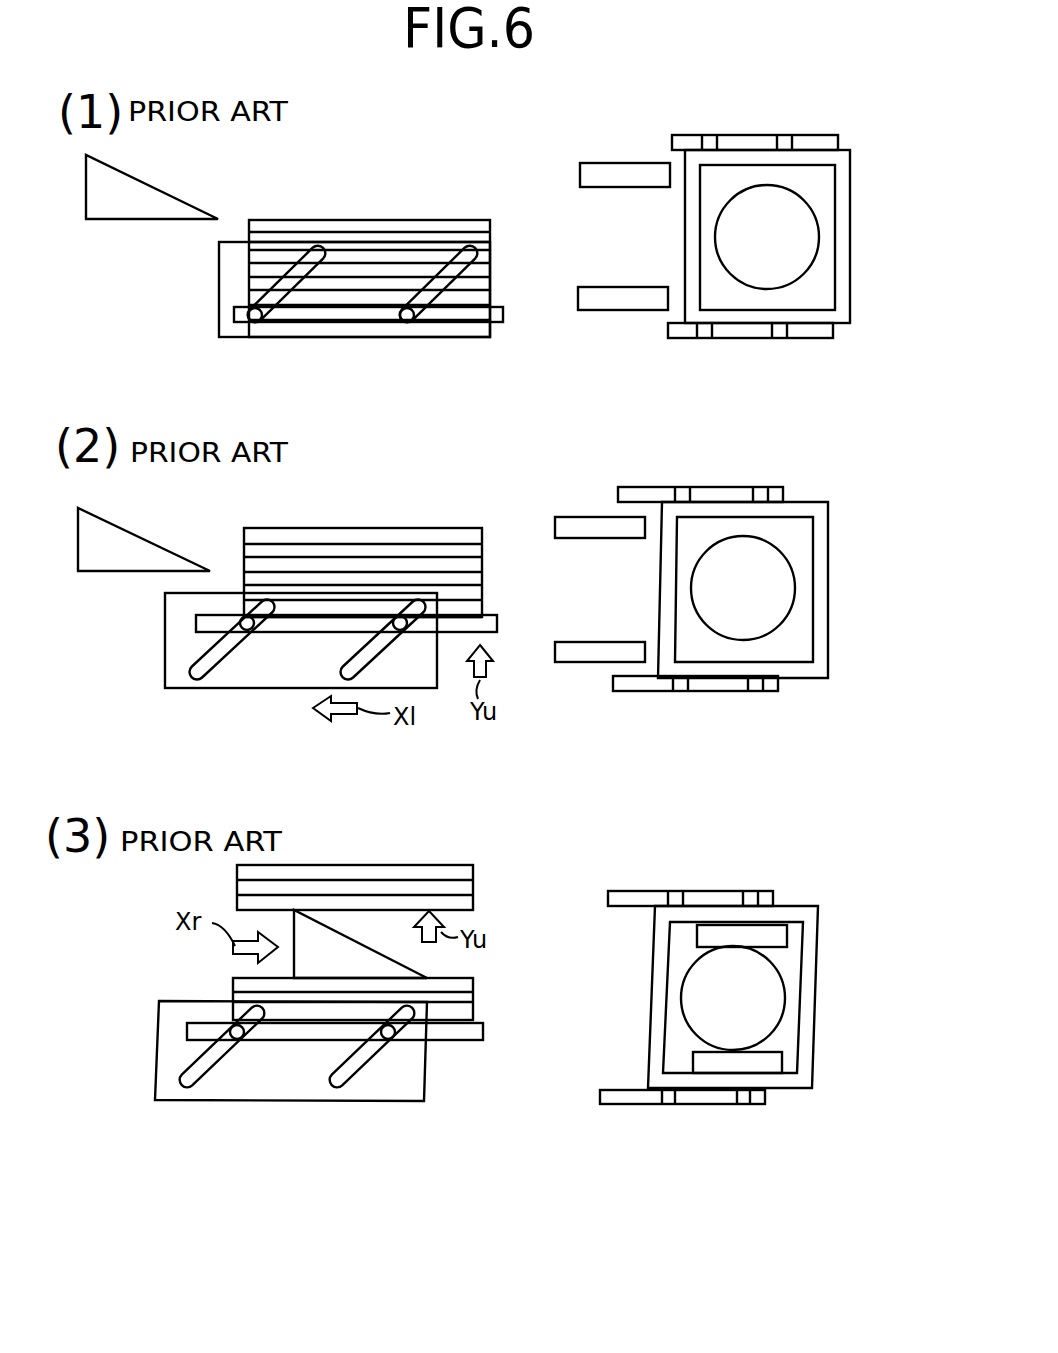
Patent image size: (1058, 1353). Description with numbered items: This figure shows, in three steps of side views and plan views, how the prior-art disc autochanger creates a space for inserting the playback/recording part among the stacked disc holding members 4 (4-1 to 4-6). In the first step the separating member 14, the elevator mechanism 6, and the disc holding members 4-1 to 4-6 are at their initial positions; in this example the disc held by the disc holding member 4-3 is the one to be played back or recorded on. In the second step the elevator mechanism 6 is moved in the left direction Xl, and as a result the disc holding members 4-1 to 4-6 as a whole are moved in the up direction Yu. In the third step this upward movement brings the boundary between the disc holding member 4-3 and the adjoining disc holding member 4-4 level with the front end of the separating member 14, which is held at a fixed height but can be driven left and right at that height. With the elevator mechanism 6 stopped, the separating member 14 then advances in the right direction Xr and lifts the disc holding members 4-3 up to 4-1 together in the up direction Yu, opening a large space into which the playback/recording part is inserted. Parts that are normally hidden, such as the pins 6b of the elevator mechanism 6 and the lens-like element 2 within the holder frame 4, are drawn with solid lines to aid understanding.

The optical element (lens) 2 is at (752, 617).
The disc holding member 4 is at (770, 619).
The disc holding member 4-1 is at (390, 607).
The disc holding member 4-3 is at (390, 584).
The disc holding member 4-4 is at (387, 655).
The disc holding member 4-6 is at (394, 662).
The elevator mechanism 6 is at (491, 627).
The pin / roller of holder 6b is at (480, 645).
The separating member 14 is at (432, 601).